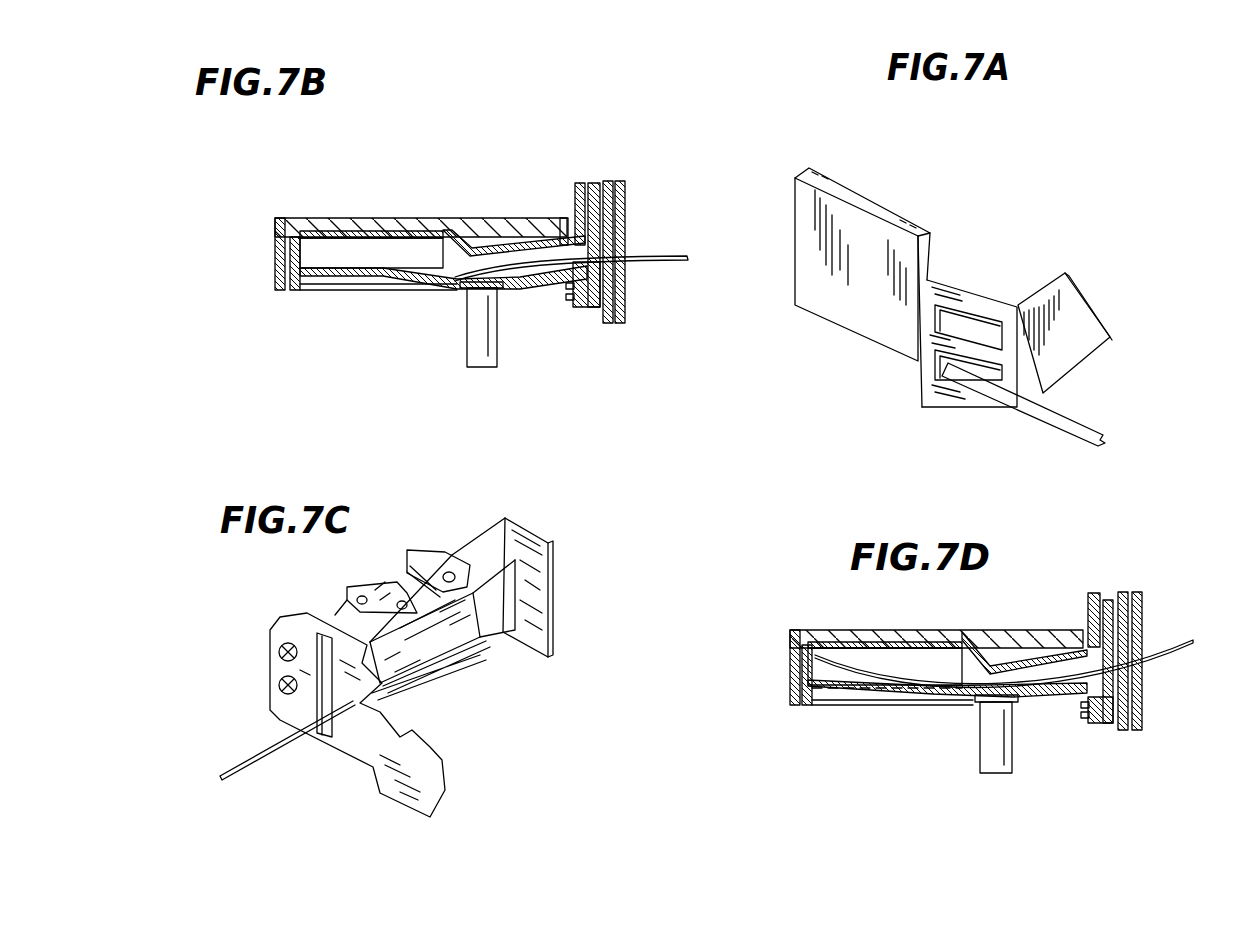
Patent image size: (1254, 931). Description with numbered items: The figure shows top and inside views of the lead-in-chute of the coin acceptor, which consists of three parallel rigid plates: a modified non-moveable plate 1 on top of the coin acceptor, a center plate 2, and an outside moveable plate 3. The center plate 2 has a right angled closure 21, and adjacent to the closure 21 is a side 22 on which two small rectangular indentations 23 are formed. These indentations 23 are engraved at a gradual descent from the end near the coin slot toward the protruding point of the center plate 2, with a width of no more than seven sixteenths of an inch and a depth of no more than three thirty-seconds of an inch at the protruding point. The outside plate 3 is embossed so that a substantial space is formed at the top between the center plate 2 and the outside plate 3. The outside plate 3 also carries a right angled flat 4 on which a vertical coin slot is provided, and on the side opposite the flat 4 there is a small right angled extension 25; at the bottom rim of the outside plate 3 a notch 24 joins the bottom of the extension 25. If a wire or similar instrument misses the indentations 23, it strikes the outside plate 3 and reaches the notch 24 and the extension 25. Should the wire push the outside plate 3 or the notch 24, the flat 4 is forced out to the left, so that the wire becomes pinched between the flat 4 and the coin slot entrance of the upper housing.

In FIG. 7B, the non-moveable plate 1 is at (477, 232).
In FIG. 7B, the center plate 2 is at (450, 237).
In FIG. 7A, the center plate 2 is at (830, 230).
In FIG. 7B, the outside moveable plate 3 is at (392, 274).
In FIG. 7B, the right angled flat 4 is at (595, 183).
In FIG. 7C, the right angled flat 4 is at (400, 787).
In FIG. 7A, the right angled closure 21 is at (1092, 340).
In FIG. 7A, the side 22 is at (933, 297).
In FIG. 7A, the rectangular indentations 23 is at (971, 326).
In FIG. 7C, the notch 24 is at (447, 670).
In FIG. 7B, the right angled extension 25 is at (277, 250).
In FIG. 7C, the right angled extension 25 is at (533, 617).